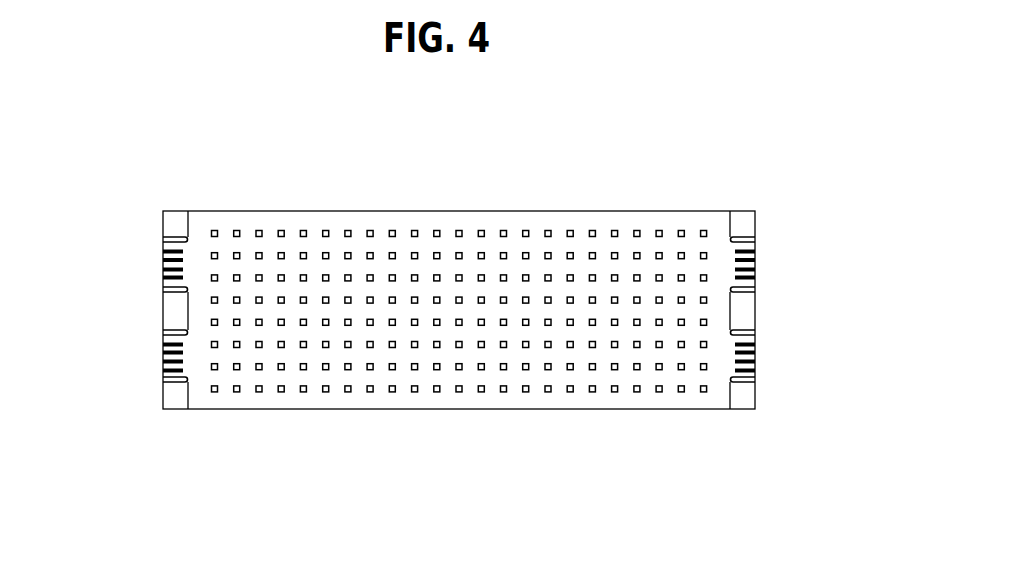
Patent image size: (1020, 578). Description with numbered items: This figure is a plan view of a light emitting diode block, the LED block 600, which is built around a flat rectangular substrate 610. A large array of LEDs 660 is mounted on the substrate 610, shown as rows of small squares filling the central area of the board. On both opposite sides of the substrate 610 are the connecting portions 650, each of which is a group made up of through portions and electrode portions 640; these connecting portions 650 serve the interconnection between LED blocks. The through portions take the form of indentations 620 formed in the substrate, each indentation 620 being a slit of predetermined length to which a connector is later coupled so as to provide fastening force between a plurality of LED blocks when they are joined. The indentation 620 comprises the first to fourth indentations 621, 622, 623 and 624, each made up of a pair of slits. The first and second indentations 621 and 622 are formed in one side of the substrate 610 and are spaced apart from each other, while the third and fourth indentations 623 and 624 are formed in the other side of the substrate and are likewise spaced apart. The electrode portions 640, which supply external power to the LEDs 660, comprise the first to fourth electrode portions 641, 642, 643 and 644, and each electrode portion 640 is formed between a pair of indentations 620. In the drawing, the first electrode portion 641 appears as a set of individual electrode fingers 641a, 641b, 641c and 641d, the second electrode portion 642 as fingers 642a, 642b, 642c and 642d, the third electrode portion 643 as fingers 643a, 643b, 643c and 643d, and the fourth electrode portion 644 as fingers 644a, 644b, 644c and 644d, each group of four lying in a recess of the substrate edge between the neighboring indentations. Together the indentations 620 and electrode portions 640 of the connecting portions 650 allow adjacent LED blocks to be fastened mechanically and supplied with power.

The LED block 600 is at (654, 186).
The substrate 610 is at (534, 225).
The indentation 620 is at (565, 550).
The first indentation 621 is at (187, 228).
The second indentation 622 is at (187, 410).
The third indentation 623 is at (731, 228).
The fourth indentation 624 is at (731, 410).
The electrode portion 640 is at (565, 515).
The first electrode portion 641 is at (88, 223).
The terminal 641a is at (163, 252).
The terminal 641b is at (163, 260).
The terminal 641c is at (163, 270).
The terminal 641d is at (163, 278).
The second electrode portion 642 is at (88, 313).
The terminal 642a is at (163, 344).
The terminal 642b is at (163, 352).
The terminal 642c is at (163, 362).
The terminal 642d is at (163, 370).
The third electrode portion 643 is at (833, 223).
The terminal 643a is at (755, 252).
The terminal 643b is at (755, 260).
The terminal 643c is at (755, 270).
The terminal 643d is at (755, 278).
The fourth electrode portion 644 is at (833, 313).
The terminal 644a is at (755, 344).
The terminal 644b is at (755, 352).
The terminal 644c is at (755, 362).
The terminal 644d is at (755, 370).
The connecting portion 650 is at (526, 500).
The LED 660 is at (259, 228).